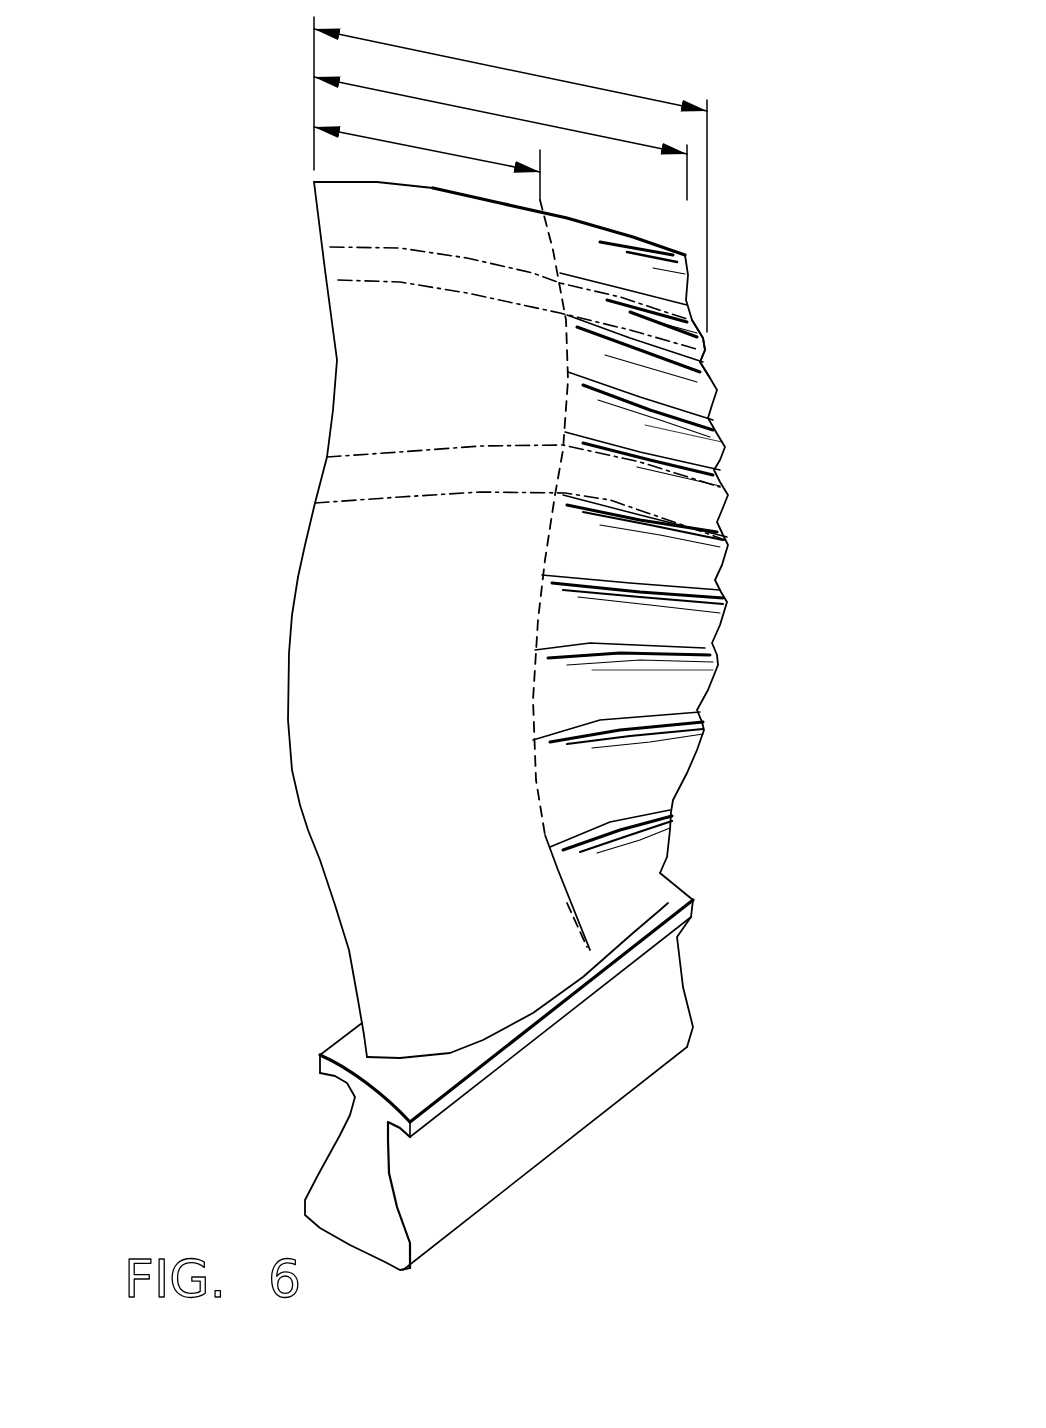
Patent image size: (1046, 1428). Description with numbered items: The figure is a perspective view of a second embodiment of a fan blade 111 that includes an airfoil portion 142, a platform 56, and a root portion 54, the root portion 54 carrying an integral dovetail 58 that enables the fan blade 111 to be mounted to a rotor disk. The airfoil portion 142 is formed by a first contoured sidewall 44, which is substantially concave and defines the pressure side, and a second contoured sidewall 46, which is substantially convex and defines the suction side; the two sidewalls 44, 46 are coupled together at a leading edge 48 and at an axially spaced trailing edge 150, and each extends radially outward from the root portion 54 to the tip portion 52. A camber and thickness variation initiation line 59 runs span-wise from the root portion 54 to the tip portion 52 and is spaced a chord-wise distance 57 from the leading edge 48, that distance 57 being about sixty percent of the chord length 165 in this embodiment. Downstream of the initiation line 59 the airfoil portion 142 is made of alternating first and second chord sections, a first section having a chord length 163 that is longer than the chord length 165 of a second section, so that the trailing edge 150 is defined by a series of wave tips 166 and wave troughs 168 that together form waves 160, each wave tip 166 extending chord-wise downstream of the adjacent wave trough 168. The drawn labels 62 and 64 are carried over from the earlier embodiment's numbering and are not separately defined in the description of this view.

The fan blade 111 is at (182, 118).
The airfoil portion 142 is at (312, 340).
The first contoured sidewall 44 is at (443, 922).
The second contoured sidewall 46 is at (367, 857).
The leading edge 48 is at (289, 653).
The tip portion 52 is at (390, 174).
The root portion 54 is at (544, 975).
The platform 56 is at (383, 1096).
The chord-wise distance 57 is at (417, 145).
The dovetail 58 is at (705, 993).
The camber and thickness variation initiation line 59 is at (550, 248).
The first section line 62 is at (400, 248).
The second section line 64 is at (407, 283).
The trailing edge 150 is at (723, 583).
The waves 160 is at (740, 533).
The chord length 163 is at (512, 67).
The chord length 165 is at (560, 128).
The wave tip 166 is at (712, 340).
The wave trough 168 is at (705, 365).